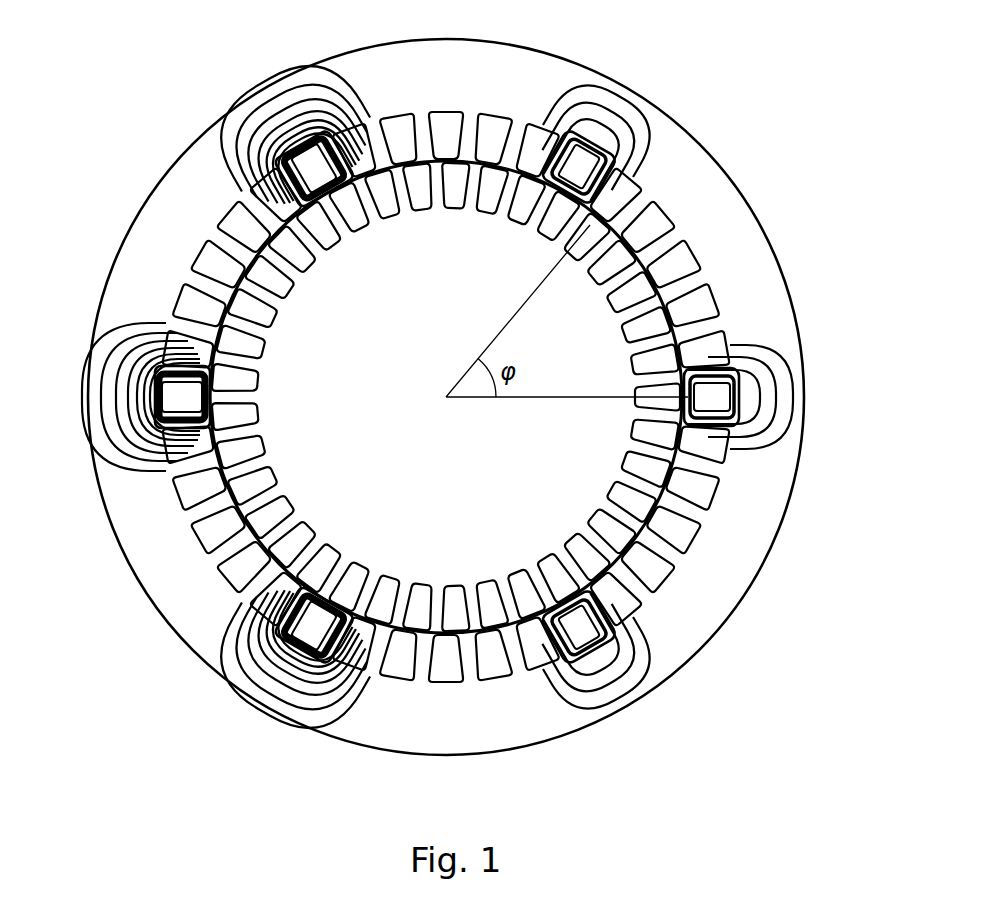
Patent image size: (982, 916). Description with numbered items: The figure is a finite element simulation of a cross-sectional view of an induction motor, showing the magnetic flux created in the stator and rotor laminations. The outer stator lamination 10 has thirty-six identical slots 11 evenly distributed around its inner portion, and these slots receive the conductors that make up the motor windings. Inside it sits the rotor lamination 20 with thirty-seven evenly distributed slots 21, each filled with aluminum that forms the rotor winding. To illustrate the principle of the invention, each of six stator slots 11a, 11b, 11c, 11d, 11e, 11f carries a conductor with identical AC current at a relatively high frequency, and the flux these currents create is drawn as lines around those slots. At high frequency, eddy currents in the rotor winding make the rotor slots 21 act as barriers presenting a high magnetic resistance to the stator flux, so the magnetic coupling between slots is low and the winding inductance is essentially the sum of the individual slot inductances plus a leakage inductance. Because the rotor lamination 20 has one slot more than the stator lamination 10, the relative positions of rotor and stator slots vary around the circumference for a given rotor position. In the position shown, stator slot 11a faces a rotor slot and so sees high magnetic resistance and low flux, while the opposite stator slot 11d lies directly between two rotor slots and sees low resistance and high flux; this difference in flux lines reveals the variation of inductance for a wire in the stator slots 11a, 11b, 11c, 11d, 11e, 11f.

The stator lamination 10 is at (692, 617).
The stator slot 11 is at (685, 257).
The stator slot 11a is at (722, 400).
The stator slot 11b is at (580, 157).
The stator slot 11c is at (310, 168).
The stator slot 11d is at (172, 398).
The stator slot 11e is at (310, 637).
The stator slot 11f is at (590, 620).
The rotor lamination 20 is at (525, 438).
The rotor slot 21 is at (615, 268).